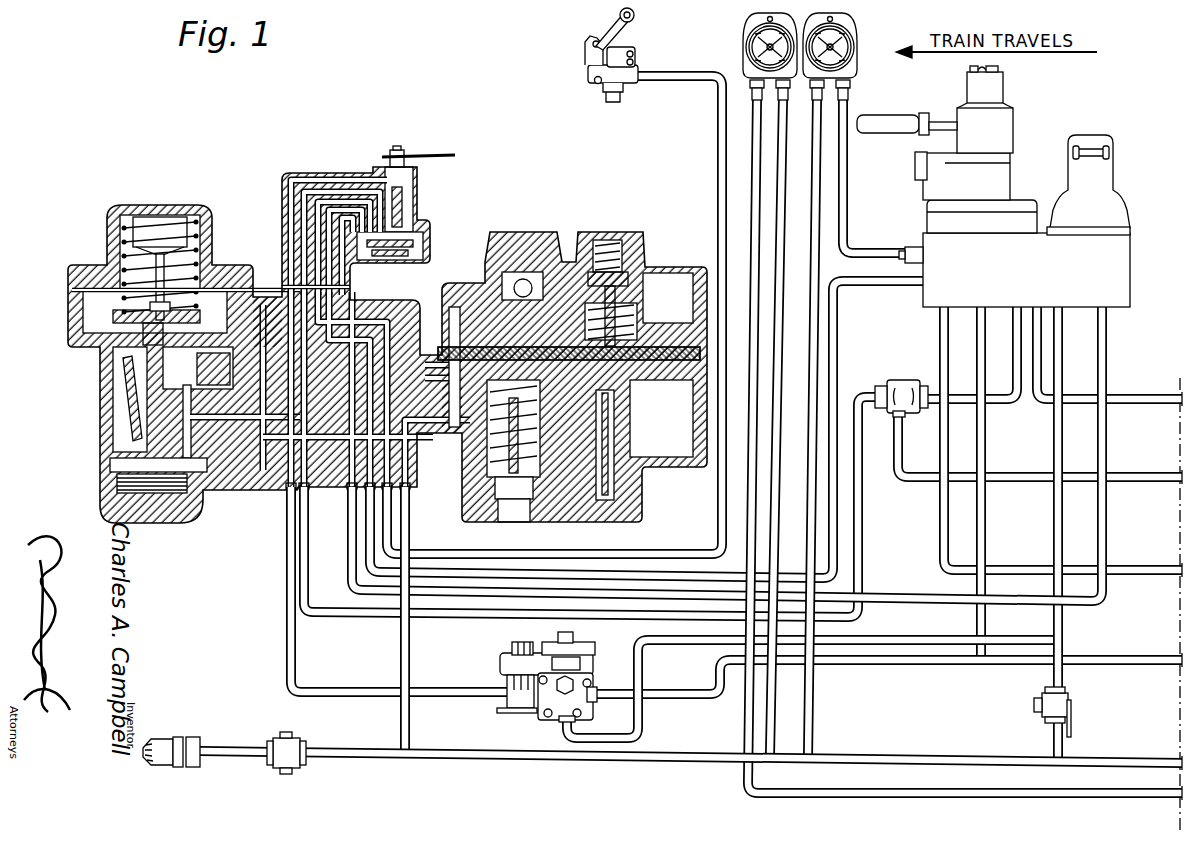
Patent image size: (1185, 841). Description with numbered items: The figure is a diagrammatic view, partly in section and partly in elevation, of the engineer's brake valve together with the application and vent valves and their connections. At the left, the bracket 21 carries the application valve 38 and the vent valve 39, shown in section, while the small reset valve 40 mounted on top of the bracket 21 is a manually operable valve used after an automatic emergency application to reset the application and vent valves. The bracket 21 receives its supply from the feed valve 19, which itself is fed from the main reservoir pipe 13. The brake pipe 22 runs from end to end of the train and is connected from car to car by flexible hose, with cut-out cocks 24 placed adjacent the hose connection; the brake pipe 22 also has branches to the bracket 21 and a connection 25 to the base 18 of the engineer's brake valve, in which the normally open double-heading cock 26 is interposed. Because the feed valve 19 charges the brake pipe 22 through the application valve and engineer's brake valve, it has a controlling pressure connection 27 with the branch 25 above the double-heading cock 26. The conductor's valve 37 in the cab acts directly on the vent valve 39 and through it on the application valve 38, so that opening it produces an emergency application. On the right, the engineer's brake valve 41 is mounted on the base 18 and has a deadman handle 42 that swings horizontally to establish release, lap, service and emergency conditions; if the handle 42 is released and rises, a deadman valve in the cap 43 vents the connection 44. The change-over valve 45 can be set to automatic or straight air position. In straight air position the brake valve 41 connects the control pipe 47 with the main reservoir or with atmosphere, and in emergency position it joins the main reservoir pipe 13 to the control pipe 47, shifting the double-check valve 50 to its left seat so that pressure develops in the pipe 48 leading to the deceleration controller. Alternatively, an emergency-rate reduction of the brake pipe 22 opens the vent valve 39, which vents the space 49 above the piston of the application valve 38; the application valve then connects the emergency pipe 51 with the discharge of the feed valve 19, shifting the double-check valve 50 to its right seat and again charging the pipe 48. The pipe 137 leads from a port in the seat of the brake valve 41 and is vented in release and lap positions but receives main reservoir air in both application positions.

The main reservoir pipe 13 is at (986, 521).
The pipe bracket 18 is at (1120, 276).
The feed valve 19 is at (500, 665).
The bracket 21 is at (367, 341).
The brake pipe 22 is at (432, 758).
The cut-out cock 24 is at (272, 738).
The connection 25 is at (1062, 444).
The double-heading cock 26 is at (1066, 702).
The controlling pressure connection 27 is at (908, 641).
The conductor's valve 37 is at (588, 73).
The application valve 38 is at (100, 372).
The vent valve 39 is at (661, 265).
The reset valve 40 is at (417, 202).
The engineer's brake valve 41 is at (1003, 139).
The handle 42 is at (887, 124).
The cap 43 is at (1000, 86).
The connection 44 is at (879, 283).
The change-over valve 45 is at (1103, 198).
The control pipe 47 is at (1003, 400).
The pipe 48 is at (915, 483).
The space 49 is at (78, 298).
The double-check valve 50 is at (898, 380).
The emergency pipe 51 is at (632, 313).
The pipe 137 is at (1143, 393).